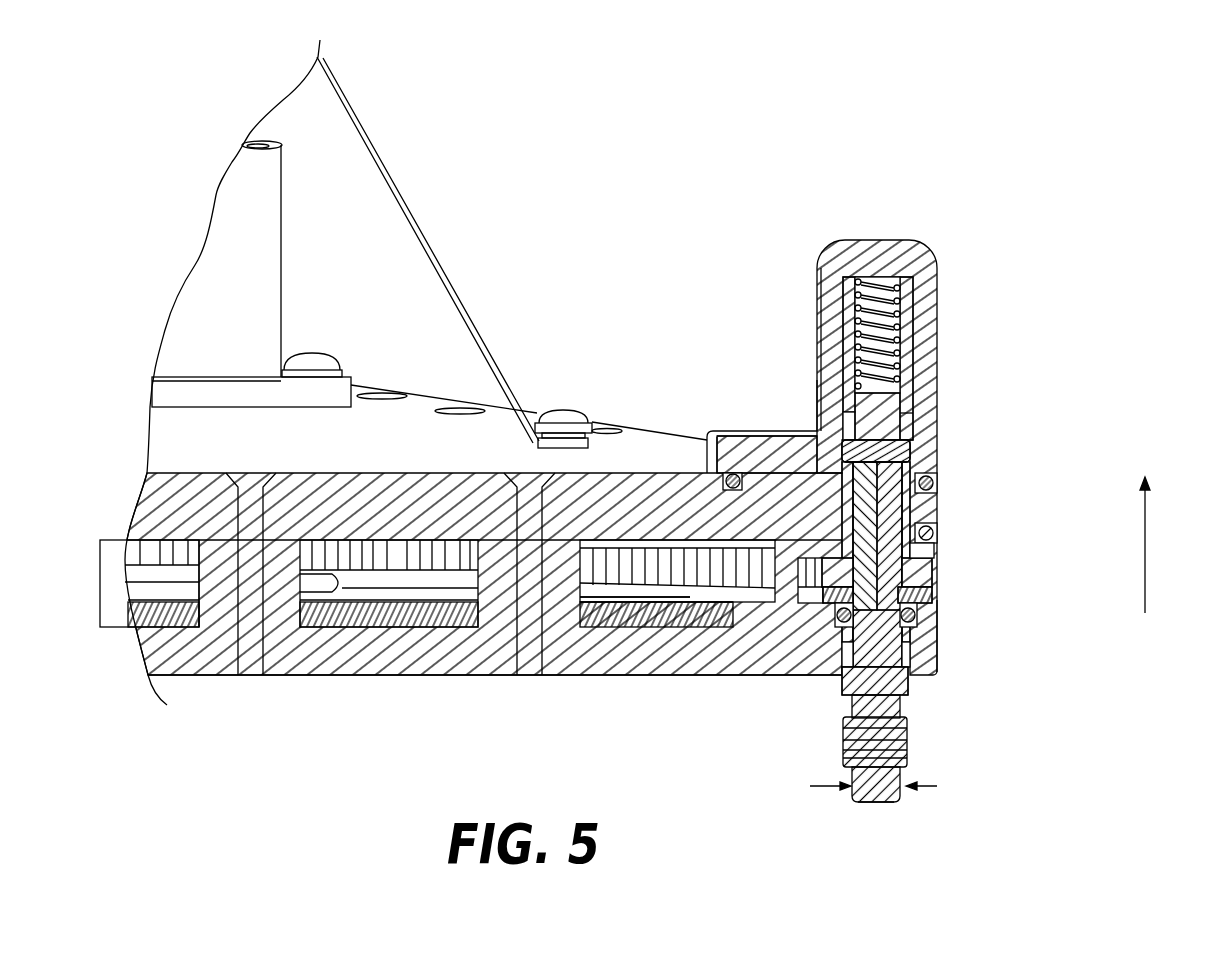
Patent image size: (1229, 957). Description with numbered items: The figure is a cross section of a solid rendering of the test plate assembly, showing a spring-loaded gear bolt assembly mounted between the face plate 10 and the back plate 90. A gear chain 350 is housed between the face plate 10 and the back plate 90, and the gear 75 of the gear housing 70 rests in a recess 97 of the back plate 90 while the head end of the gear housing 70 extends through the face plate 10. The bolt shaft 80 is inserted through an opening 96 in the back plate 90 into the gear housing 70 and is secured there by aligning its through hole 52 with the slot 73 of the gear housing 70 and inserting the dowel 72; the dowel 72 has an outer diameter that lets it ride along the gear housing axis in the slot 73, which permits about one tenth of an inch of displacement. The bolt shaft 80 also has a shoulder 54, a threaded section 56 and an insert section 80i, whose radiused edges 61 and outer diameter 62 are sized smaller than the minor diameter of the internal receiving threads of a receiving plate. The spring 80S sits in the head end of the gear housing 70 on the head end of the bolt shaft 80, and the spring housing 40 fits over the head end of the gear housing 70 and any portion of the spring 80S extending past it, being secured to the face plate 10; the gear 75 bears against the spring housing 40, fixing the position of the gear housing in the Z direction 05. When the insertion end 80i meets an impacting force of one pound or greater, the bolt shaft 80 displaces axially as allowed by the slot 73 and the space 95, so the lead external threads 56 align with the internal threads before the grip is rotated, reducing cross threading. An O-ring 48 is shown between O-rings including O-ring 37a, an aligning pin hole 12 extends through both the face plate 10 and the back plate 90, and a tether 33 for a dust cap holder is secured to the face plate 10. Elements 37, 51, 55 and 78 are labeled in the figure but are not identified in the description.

The Z direction 05 is at (1147, 518).
The face plate 10 is at (675, 443).
The aligning pin hole 12 is at (925, 550).
The tether 33 is at (463, 298).
The housing wall 37 is at (943, 615).
The O-ring 37a is at (927, 468).
The spring housing 40 is at (880, 238).
The O-ring 48 is at (938, 537).
The housing side wall 51 is at (817, 343).
The through hole 52 is at (902, 413).
The shoulder 54 is at (910, 685).
The shaft neck 55 is at (900, 703).
The threaded section 56 is at (910, 745).
The radiused edges 61 is at (902, 803).
The outer diameter 62 is at (937, 785).
The gear housing 70 is at (912, 515).
The dowel 72 is at (910, 450).
The slot 73 is at (818, 423).
The gear 75 is at (932, 573).
The bearing gap 78 is at (937, 597).
The bolt shaft 80 is at (890, 513).
The spring 80S is at (900, 342).
The insert section 80i is at (872, 803).
The back plate 90 is at (594, 677).
The space 95 is at (827, 732).
The opening 96 is at (832, 658).
The recess 97 is at (645, 590).
The gear chain 350 is at (707, 708).